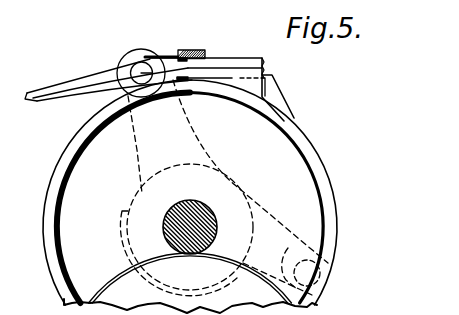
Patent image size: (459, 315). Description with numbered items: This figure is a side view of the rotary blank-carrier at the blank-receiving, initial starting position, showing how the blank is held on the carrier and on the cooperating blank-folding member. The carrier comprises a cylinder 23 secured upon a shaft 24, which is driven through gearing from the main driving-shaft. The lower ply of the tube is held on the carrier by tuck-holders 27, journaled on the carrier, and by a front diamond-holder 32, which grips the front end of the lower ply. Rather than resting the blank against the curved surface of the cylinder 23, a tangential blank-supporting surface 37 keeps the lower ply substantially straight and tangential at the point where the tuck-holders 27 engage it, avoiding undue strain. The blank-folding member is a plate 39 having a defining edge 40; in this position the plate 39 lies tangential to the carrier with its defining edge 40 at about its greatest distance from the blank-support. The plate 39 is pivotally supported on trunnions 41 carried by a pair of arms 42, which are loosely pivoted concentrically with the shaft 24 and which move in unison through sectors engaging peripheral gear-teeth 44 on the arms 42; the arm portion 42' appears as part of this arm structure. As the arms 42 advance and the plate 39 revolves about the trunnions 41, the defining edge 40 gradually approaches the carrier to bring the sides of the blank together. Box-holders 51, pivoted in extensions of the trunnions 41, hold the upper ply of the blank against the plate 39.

The cylinder 23 is at (318, 162).
The shaft 24 is at (212, 220).
The tuck-holders 27 is at (185, 82).
The front diamond-holder 32 is at (277, 95).
The tangential blank-supporting surface 37 is at (231, 77).
The plate 39 is at (200, 52).
The defining edge 40 is at (143, 61).
The trunnions 41 is at (134, 62).
The arms 42 is at (228, 171).
The arm end 42' is at (312, 248).
The peripheral gear-teeth 44 is at (125, 258).
The box-holders 51 is at (168, 95).